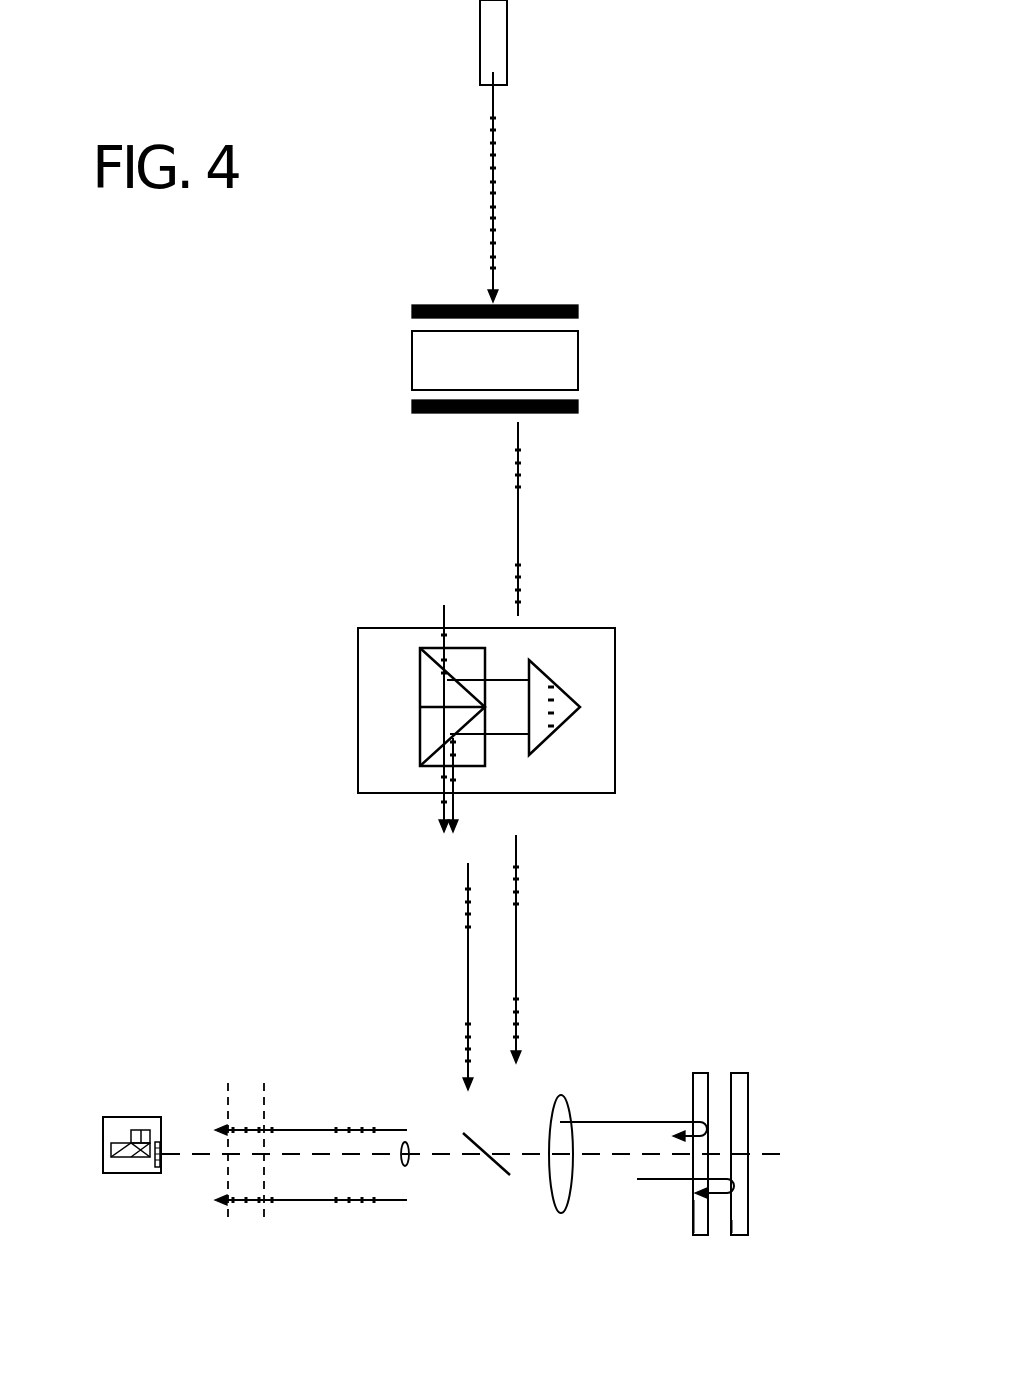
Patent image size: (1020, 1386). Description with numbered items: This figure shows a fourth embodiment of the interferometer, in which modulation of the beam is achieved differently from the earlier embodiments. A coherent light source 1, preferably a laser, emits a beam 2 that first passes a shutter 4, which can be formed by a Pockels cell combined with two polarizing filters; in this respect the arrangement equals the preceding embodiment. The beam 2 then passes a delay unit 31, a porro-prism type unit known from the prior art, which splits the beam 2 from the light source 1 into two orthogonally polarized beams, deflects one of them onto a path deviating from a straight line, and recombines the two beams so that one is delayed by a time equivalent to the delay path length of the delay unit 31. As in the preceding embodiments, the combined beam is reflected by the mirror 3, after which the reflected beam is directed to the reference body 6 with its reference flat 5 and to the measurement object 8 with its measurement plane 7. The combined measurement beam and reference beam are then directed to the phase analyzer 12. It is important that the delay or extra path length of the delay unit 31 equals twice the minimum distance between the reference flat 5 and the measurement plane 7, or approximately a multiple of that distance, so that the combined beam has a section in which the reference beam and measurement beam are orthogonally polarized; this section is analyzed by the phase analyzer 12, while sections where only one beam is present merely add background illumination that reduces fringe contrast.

The coherent light source 1 is at (496, 52).
The beam 2 is at (493, 162).
The mirror 3 is at (473, 1139).
The shutter 4 is at (571, 380).
The reference flat 5 is at (697, 1212).
The reference body 6 is at (699, 1077).
The measurement plane 7 is at (720, 1238).
The measurement object 8 is at (741, 1121).
The phase analyzer 12 is at (113, 1172).
The delay unit 31 is at (605, 740).